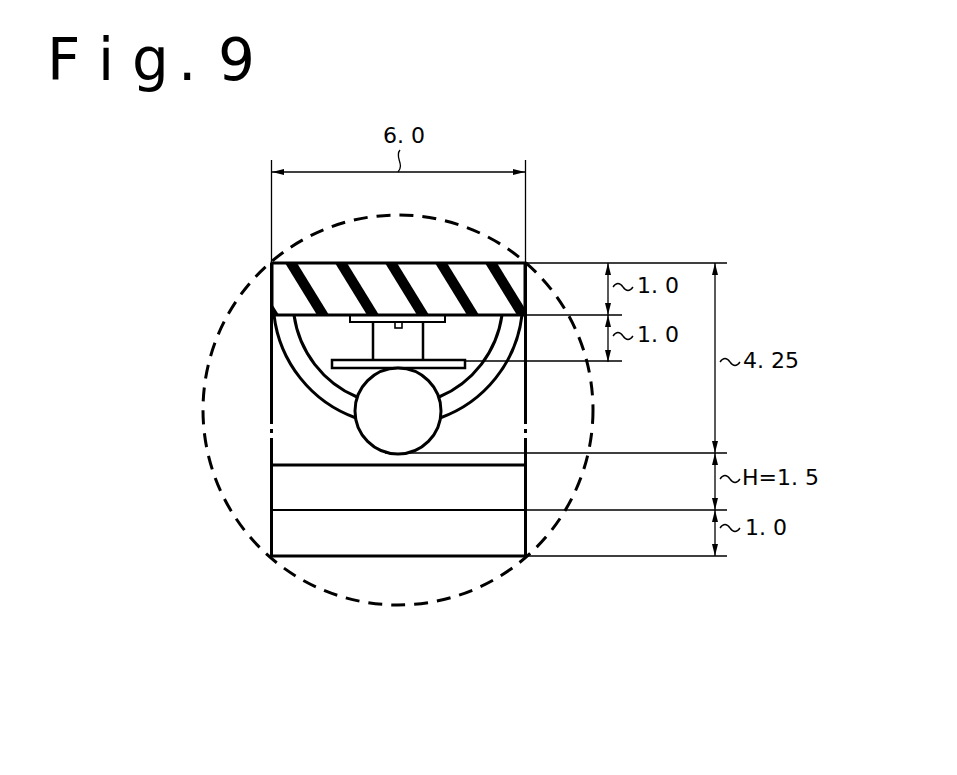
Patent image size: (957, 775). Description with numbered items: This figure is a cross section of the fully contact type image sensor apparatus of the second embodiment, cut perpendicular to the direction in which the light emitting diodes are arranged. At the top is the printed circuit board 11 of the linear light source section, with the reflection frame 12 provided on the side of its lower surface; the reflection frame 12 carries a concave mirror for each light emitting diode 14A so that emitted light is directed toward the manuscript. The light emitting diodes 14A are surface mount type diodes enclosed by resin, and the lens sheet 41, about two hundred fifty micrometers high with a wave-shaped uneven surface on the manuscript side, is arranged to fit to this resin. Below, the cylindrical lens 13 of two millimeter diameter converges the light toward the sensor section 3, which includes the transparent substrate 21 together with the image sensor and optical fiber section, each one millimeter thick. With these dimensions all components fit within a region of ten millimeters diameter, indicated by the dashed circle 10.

The printed circuit board 11 is at (271, 290).
The reflection frame 12 is at (281, 330).
The light emitting diode 14A is at (400, 324).
The lens sheet 41 is at (355, 365).
The cylindrical lens 13 is at (365, 440).
The transparent substrate 21 is at (271, 488).
The sensor section 3 is at (530, 540).
The outer diameter circle (10 phi) 10 is at (293, 573).